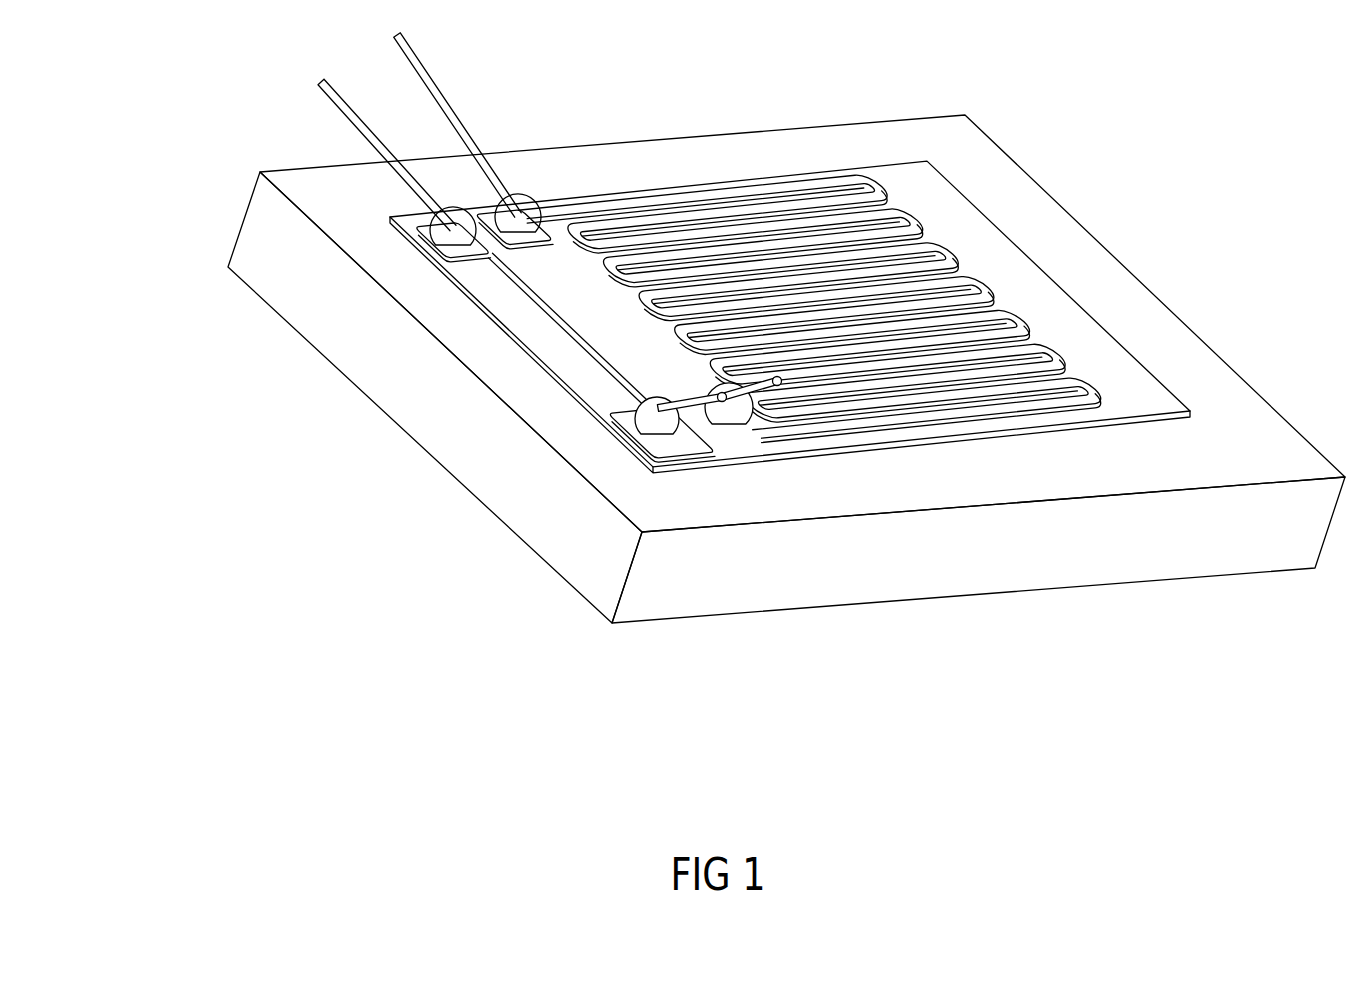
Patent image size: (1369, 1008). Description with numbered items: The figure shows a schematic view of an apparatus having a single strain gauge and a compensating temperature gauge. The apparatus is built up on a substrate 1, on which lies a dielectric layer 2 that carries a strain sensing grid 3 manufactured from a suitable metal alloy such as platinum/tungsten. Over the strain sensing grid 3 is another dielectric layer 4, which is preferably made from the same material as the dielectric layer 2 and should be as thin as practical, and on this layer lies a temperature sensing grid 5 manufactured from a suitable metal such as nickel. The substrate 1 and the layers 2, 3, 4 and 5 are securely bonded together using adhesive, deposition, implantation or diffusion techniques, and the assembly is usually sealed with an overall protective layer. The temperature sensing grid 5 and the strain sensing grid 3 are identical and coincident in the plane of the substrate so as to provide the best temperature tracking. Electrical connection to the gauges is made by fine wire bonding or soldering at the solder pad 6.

The substrate 1 is at (352, 218).
The dielectric layer 2 is at (513, 320).
The strain sensing grid 3 is at (613, 421).
The dielectric layer 4 is at (1075, 327).
The temperature sensing grid 5 is at (878, 188).
The solder pad 6 is at (660, 418).